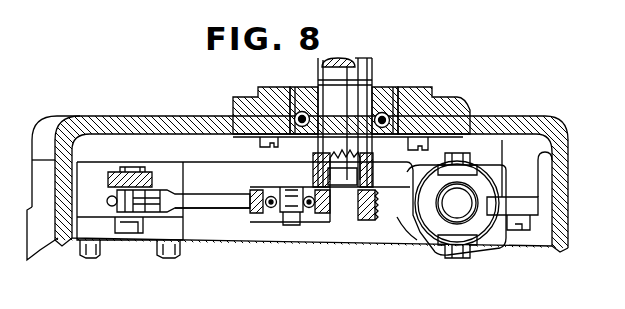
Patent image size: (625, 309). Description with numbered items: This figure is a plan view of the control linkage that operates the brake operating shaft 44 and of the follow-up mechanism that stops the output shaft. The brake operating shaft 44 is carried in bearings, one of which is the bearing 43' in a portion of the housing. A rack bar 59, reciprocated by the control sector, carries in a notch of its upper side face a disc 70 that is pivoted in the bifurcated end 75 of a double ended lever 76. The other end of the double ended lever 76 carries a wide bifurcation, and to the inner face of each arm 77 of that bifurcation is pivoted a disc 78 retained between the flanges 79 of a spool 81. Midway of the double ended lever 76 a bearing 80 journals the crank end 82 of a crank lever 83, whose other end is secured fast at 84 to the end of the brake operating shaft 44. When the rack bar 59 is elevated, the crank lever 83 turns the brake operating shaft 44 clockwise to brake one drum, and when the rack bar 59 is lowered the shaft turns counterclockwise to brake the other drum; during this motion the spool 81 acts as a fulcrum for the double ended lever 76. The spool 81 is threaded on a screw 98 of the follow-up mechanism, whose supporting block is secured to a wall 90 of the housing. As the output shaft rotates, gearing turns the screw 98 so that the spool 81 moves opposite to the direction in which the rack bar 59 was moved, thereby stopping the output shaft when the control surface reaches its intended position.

The bearing 43' is at (329, 109).
The brake operating shaft 44 is at (368, 72).
The rack bar 59 is at (150, 172).
The disc 70 is at (110, 202).
The bifurcated end 75 is at (170, 192).
The double ended lever 76 is at (227, 210).
The arm 77 is at (432, 252).
The disc 78 is at (479, 241).
The flange 79 is at (418, 222).
The bearing 80 is at (312, 214).
The spool 81 is at (486, 224).
The crank end 82 is at (273, 192).
The crank lever 83 is at (277, 167).
The fastening point 84 is at (367, 163).
The wall 90 is at (482, 135).
The screw 98 is at (468, 201).